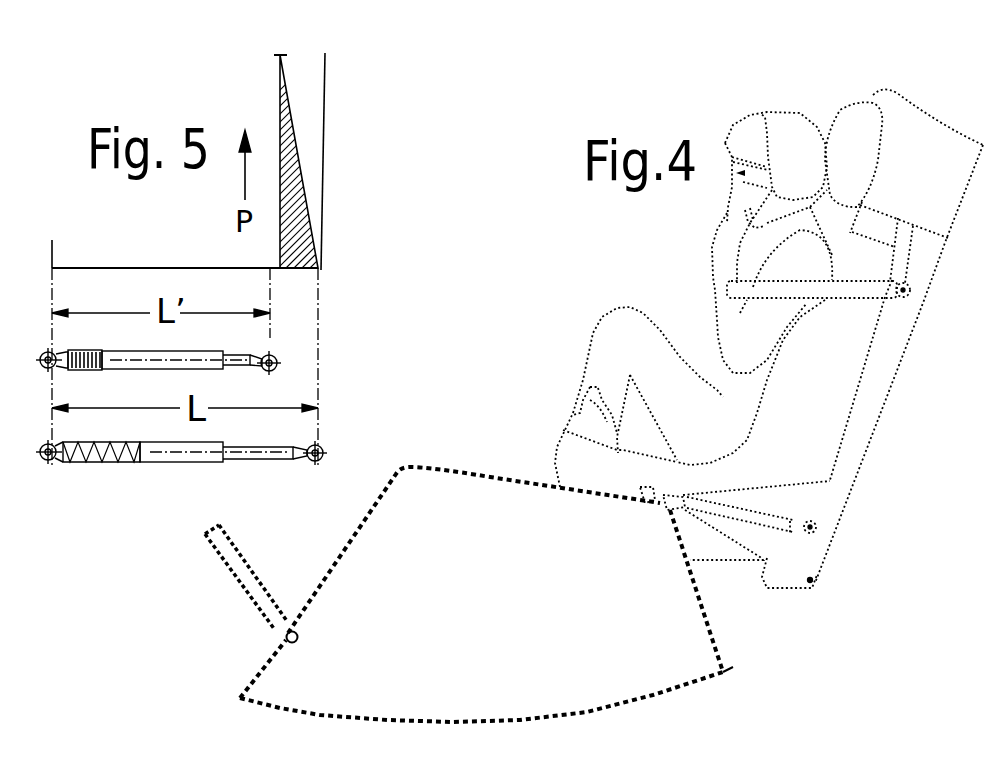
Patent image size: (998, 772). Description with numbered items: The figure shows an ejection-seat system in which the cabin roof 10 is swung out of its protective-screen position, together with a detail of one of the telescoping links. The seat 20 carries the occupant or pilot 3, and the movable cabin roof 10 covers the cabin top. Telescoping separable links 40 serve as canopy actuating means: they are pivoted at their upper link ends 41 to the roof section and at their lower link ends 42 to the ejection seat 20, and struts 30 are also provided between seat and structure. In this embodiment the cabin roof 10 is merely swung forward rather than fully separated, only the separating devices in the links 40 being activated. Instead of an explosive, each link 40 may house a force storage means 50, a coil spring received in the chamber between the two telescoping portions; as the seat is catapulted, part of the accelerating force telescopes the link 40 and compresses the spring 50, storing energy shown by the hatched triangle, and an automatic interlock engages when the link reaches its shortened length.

In FIG. 4, the pilot 3 is at (778, 133).
In FIG. 4, the cabin roof 10 is at (697, 643).
In FIG. 4, the seat 20 is at (833, 382).
In FIG. 4, the struts 30 is at (763, 513).
In FIG. 5, the telescoping separable links 40 is at (102, 462).
In FIG. 4, the telescoping separable links 40 is at (835, 291).
In FIG. 4, the link ends 41 is at (283, 642).
In FIG. 4, the link ends 42 is at (910, 297).
In FIG. 5, the force storage means 50 is at (155, 467).